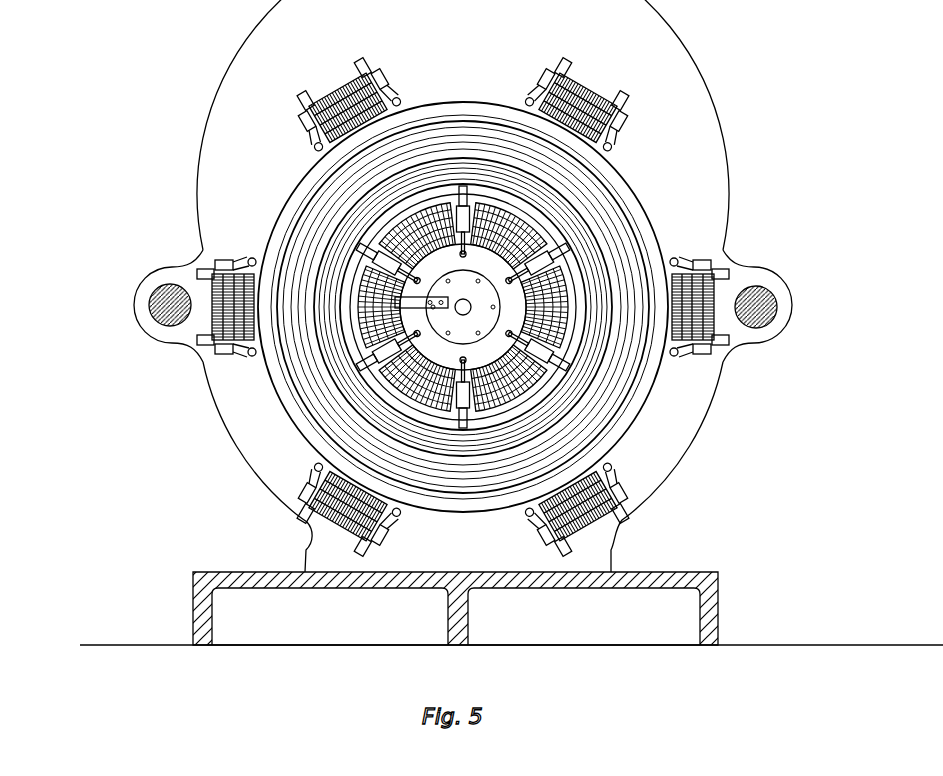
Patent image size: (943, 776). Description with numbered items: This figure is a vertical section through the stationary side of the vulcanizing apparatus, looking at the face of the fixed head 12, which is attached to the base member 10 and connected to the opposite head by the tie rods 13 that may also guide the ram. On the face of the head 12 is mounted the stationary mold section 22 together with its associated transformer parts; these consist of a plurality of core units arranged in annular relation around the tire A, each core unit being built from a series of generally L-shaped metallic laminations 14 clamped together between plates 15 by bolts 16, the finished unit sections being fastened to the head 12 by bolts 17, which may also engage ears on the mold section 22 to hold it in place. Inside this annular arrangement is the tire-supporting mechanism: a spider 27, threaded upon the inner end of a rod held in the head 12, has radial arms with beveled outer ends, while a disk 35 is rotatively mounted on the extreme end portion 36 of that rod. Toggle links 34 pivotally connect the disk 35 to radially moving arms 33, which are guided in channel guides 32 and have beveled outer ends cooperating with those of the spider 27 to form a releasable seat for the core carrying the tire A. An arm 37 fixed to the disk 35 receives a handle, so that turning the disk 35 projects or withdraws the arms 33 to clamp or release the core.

The base member 10 is at (655, 573).
The fixed head 12 is at (237, 391).
The tie rods 13 is at (171, 307).
The metallic laminations 14 is at (331, 96).
The clamping plates 15 is at (370, 68).
The bolts 16 is at (384, 78).
The bolts 17 is at (402, 100).
The mold section 22 is at (648, 238).
The tire A is at (602, 412).
The spider 27 is at (509, 281).
The channel guides 32 is at (469, 206).
The radially moving arms 33 is at (468, 258).
The toggle links 34 is at (468, 270).
The disk 35 is at (482, 316).
The extreme end portion of rod 36 is at (465, 315).
The arm 37 is at (428, 307).